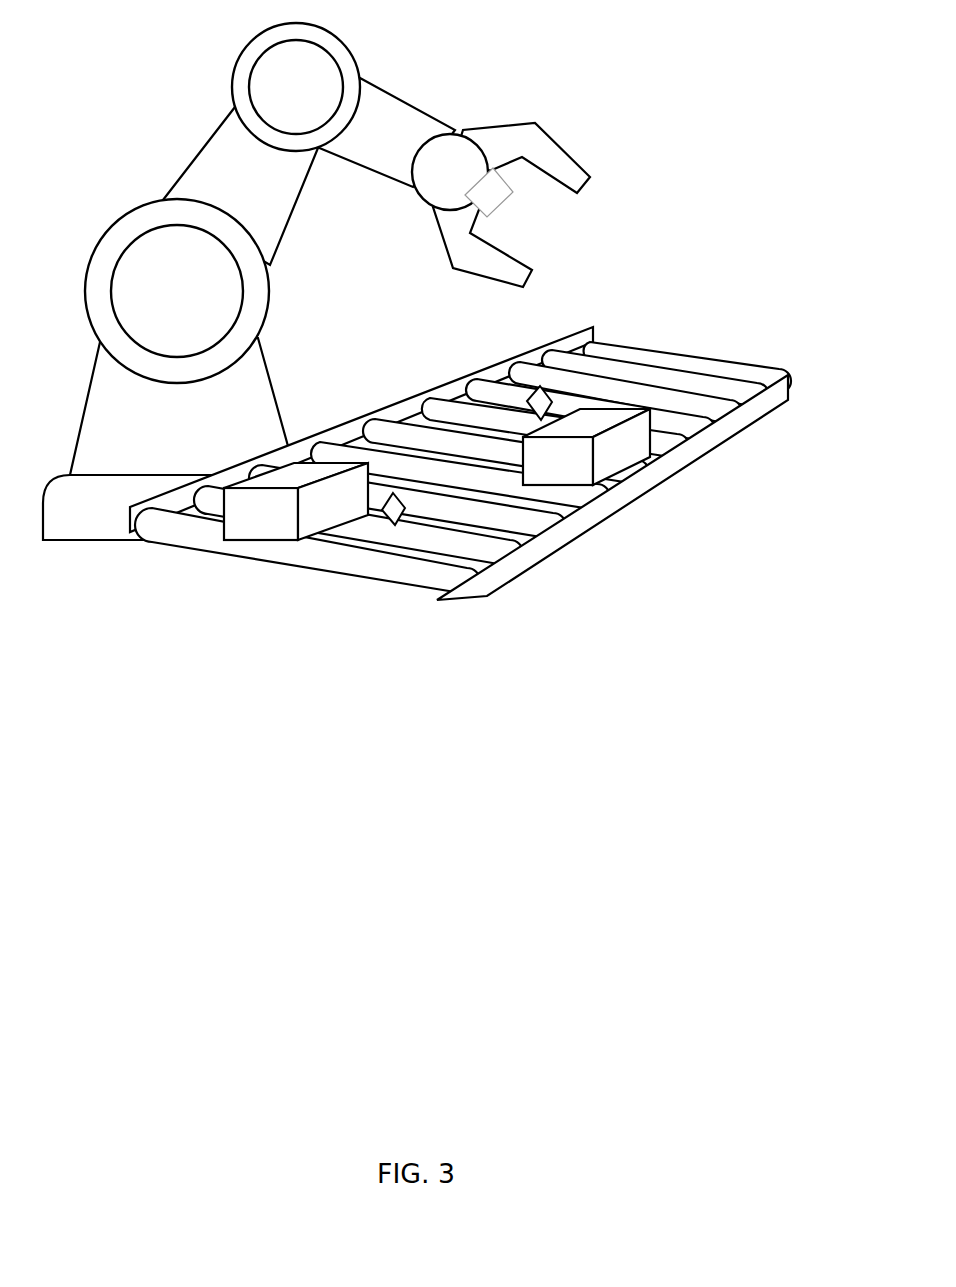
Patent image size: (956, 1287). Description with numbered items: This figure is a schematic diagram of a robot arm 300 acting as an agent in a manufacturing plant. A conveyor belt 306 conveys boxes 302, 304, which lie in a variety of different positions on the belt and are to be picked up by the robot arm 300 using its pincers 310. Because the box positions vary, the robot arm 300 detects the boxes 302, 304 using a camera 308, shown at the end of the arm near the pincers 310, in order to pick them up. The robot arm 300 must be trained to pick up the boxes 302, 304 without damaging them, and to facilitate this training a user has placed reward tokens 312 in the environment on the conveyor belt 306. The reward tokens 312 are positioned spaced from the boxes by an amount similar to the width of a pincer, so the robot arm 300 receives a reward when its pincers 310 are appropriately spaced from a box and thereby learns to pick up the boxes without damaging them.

The robot arm 300 is at (228, 178).
The box 302 is at (625, 453).
The box 304 is at (262, 513).
The conveyor belt 306 is at (723, 397).
The camera 308 is at (502, 203).
The pincers 310 is at (593, 162).
The reward tokens 312 is at (530, 400).